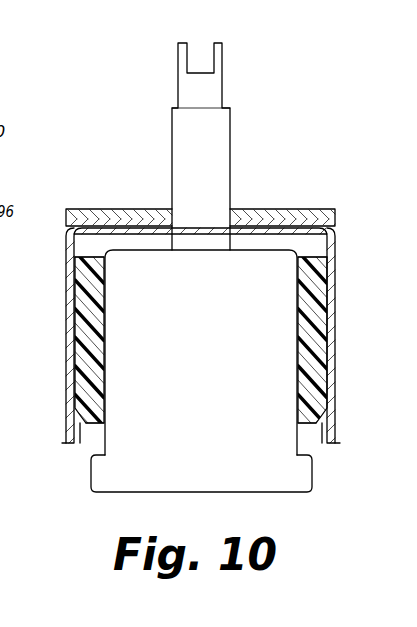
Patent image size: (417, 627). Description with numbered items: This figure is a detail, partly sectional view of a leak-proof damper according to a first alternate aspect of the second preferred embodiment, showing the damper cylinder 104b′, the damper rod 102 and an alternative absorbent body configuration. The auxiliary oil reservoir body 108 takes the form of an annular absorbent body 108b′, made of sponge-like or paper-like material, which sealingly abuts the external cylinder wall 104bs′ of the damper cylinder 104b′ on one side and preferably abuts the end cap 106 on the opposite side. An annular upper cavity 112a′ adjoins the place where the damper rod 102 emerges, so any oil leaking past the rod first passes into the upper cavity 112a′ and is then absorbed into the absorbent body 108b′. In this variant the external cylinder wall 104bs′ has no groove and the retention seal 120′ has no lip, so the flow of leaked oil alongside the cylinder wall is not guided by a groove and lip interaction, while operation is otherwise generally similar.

The damper rod 102 is at (238, 157).
The end cap 106 is at (334, 232).
The auxiliary oil reservoir body 108 is at (213, 172).
The absorbent body 108b′ is at (213, 172).
The annular upper cavity 112a′ is at (189, 185).
The external cylinder wall 104bs′ is at (163, 340).
The retention seal 120′ is at (177, 455).
The damper cylinder 104b′ is at (225, 372).